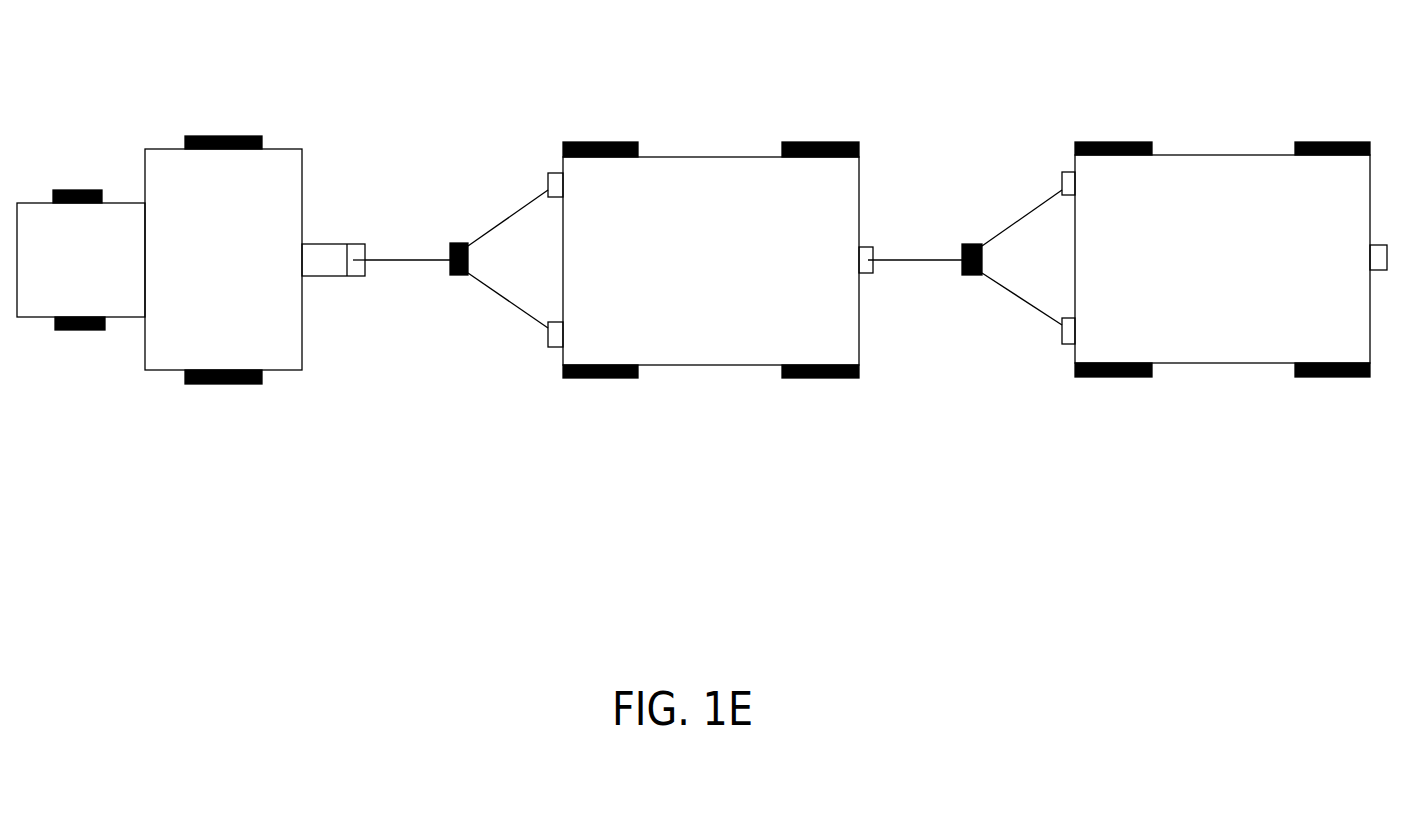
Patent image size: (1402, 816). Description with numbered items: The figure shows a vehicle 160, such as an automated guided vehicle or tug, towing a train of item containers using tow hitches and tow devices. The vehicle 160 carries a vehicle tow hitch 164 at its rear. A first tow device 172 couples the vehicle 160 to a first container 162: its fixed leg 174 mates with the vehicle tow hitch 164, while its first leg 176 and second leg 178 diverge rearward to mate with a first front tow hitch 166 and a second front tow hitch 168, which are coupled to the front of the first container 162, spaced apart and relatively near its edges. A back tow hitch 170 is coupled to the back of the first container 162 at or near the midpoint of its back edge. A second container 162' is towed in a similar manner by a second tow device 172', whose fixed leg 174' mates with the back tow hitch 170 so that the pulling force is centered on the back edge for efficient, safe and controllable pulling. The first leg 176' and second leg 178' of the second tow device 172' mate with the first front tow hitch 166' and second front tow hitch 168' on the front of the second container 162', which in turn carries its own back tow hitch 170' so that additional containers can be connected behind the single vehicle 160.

The vehicle 160 is at (208, 102).
The first container 162 is at (711, 221).
The second container 162' is at (1222, 211).
The vehicle tow hitch 164 is at (358, 243).
The first front tow hitch 166 is at (569, 142).
The first front tow hitch 166' is at (1084, 140).
The second front tow hitch 168 is at (540, 375).
The second front tow hitch 168' is at (1067, 376).
The back tow hitch 170 is at (886, 221).
The back tow hitch 170' is at (1361, 183).
The first tow device 172 is at (438, 299).
The second tow device 172' is at (958, 286).
The fixed leg 174 is at (407, 238).
The fixed leg 174' is at (915, 284).
The first leg 176 is at (499, 214).
The first leg 176' is at (1012, 214).
The second leg 178 is at (507, 311).
The second leg 178' is at (1017, 328).